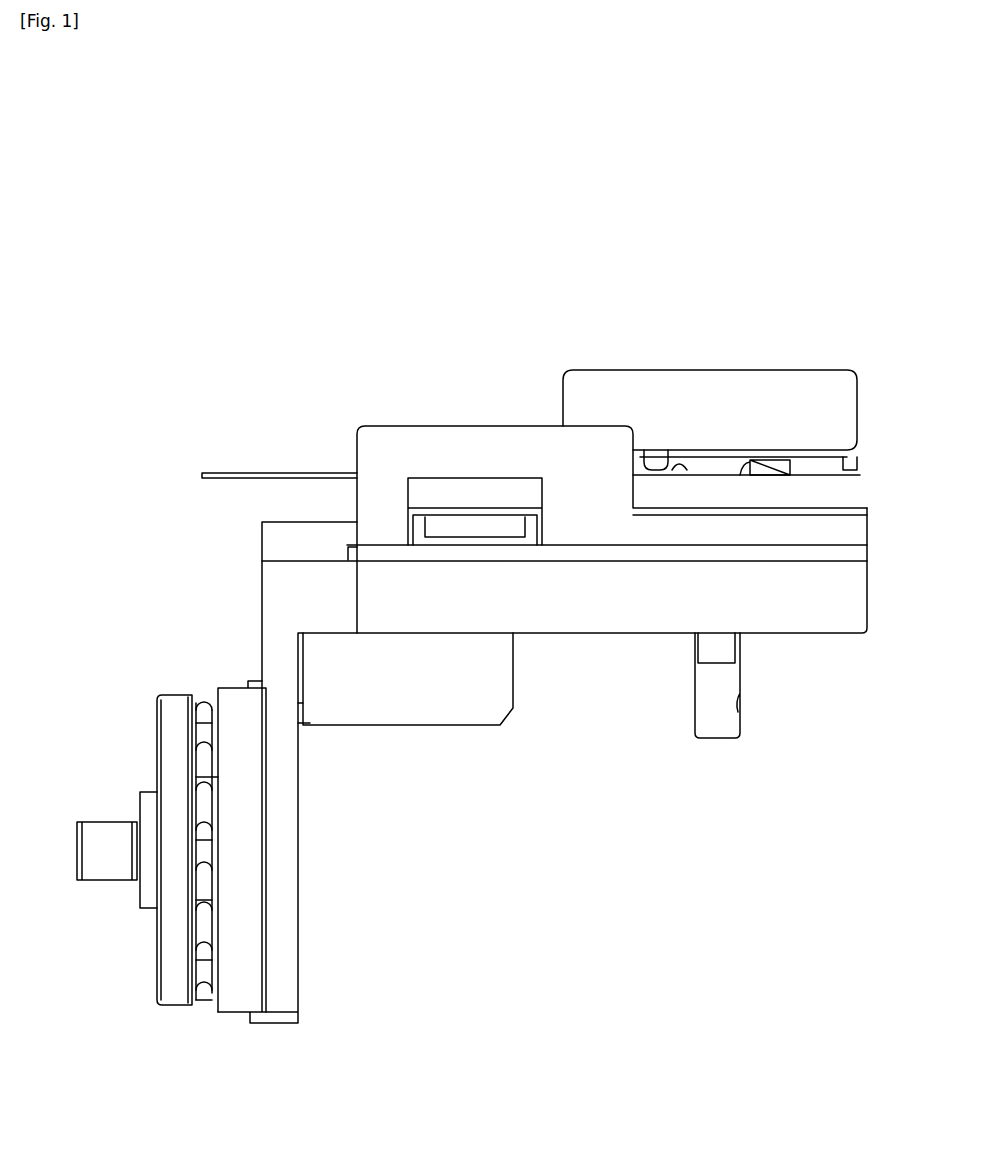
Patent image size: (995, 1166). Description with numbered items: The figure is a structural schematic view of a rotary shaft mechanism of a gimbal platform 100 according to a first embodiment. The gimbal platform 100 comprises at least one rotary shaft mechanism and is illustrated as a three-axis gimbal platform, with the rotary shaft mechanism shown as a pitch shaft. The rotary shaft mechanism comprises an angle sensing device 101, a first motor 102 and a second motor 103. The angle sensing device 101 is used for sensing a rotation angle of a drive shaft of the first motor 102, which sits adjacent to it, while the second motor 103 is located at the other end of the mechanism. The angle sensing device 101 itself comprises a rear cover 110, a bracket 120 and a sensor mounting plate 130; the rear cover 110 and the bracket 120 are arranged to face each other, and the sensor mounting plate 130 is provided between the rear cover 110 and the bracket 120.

The gimbal platform 100 is at (462, 212).
The angle sensing device 101 is at (520, 360).
The first motor 102 is at (742, 390).
The second motor 103 is at (245, 895).
The rear cover 110 is at (570, 480).
The bracket 120 is at (376, 600).
The sensor mounting plate 130 is at (488, 560).